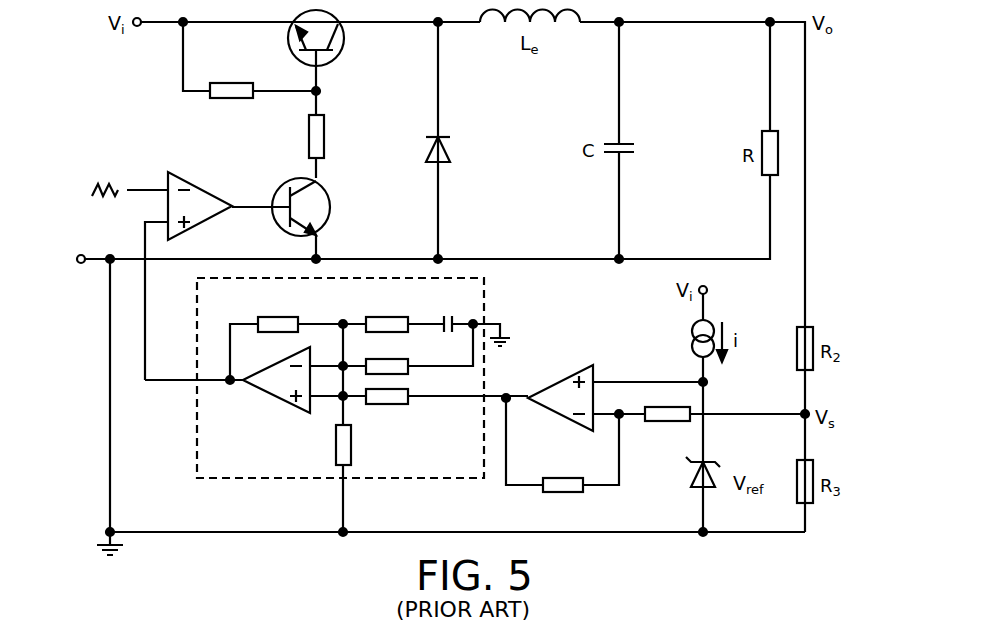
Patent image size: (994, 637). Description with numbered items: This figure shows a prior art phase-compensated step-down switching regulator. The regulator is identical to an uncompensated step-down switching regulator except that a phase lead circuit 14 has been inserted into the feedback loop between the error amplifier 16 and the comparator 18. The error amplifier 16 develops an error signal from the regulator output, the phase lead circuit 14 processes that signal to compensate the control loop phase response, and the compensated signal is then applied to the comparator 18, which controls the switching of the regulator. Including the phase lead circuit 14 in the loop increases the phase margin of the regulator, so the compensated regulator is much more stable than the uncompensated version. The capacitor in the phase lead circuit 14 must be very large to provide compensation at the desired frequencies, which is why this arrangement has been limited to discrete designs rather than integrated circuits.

The phase lead circuit 14 is at (486, 312).
The error amplifier 16 is at (572, 378).
The comparator 18 is at (206, 190).